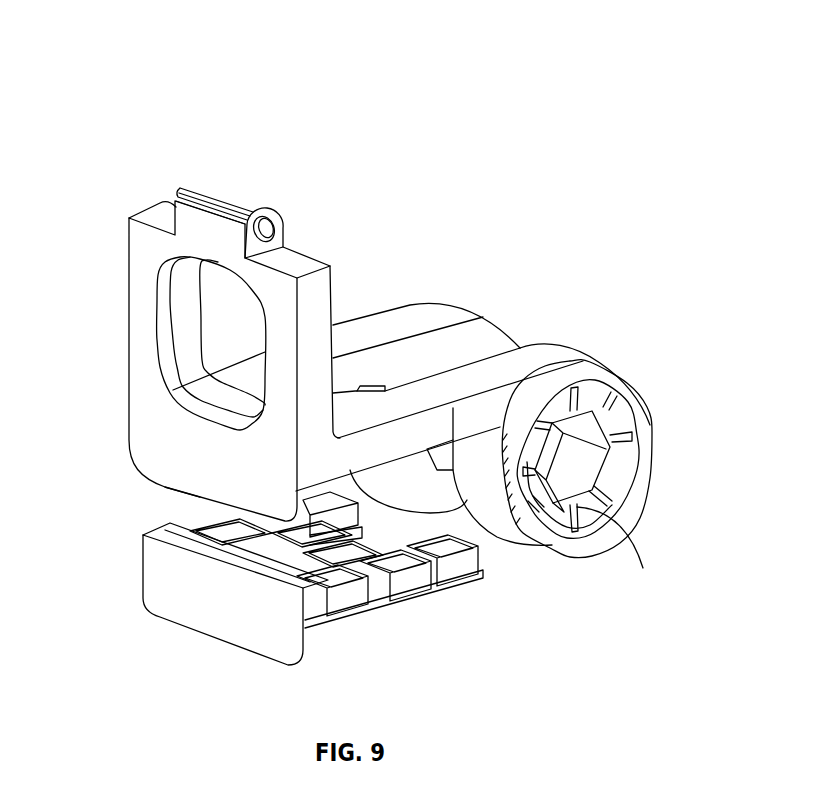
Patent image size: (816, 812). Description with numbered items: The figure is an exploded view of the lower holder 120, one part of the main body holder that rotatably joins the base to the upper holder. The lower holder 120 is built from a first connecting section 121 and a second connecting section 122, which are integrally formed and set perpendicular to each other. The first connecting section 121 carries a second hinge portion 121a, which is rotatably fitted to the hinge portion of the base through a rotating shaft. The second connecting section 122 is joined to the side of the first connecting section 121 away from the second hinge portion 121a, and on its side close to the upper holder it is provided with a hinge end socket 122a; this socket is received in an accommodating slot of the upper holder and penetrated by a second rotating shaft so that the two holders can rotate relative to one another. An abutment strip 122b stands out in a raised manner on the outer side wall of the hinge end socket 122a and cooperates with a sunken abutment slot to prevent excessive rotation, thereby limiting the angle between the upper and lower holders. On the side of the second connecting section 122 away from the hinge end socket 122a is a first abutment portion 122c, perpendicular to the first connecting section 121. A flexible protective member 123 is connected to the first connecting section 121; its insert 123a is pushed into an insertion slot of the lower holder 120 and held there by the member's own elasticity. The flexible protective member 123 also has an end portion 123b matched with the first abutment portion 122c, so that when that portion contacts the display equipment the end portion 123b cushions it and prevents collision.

The lower holder 120 is at (427, 62).
The first connecting section 121 is at (362, 337).
The second hinge portion 121a is at (622, 542).
The second connecting section 122 is at (140, 326).
The hinge end socket 122a is at (242, 200).
The abutment strip 122b is at (188, 192).
The first abutment portion 122c is at (160, 473).
The flexible protective member 123 is at (373, 605).
The insert 123a is at (470, 578).
The end portion 123b is at (223, 623).